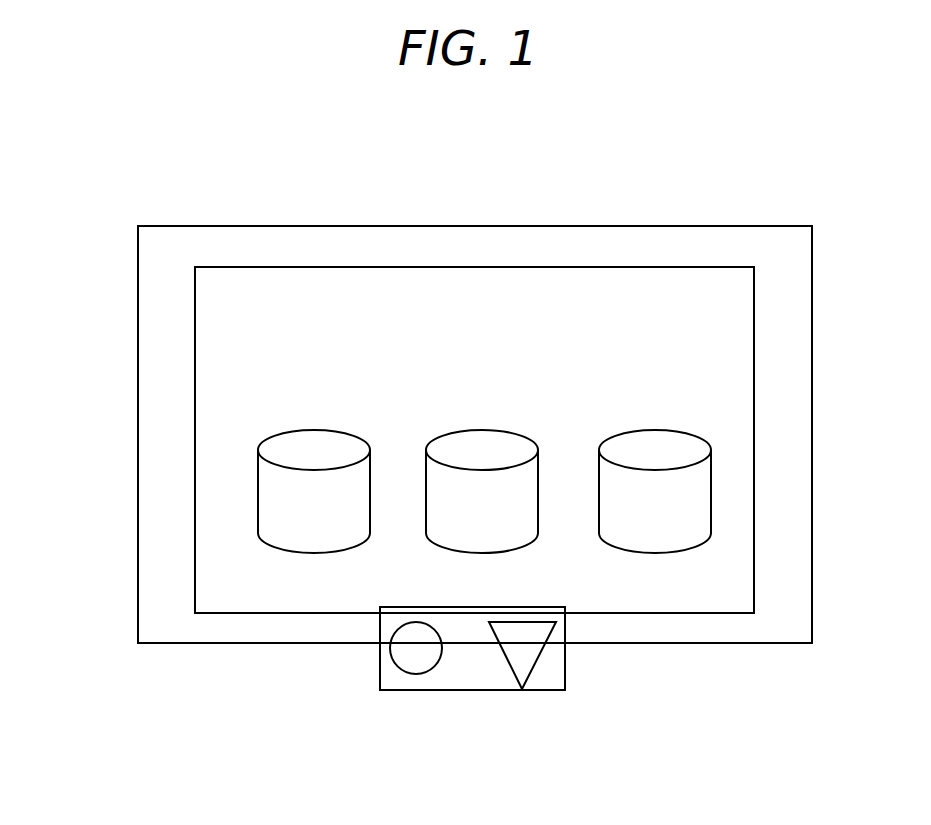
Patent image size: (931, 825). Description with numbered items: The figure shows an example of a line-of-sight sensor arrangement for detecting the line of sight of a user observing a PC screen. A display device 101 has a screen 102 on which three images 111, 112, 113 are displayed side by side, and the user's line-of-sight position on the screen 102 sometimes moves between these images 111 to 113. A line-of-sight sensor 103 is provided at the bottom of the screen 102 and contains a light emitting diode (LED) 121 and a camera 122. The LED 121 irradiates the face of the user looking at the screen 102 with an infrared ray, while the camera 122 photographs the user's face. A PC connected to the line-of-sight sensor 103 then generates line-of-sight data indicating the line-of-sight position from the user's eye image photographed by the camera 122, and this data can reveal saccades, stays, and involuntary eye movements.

The display device 101 is at (138, 389).
The screen 102 is at (430, 300).
The line-of-sight sensor 103 is at (475, 690).
The image 111 is at (315, 430).
The image 112 is at (478, 430).
The image 113 is at (648, 430).
The light emitting diode (LED) 121 is at (397, 668).
The camera 122 is at (532, 672).